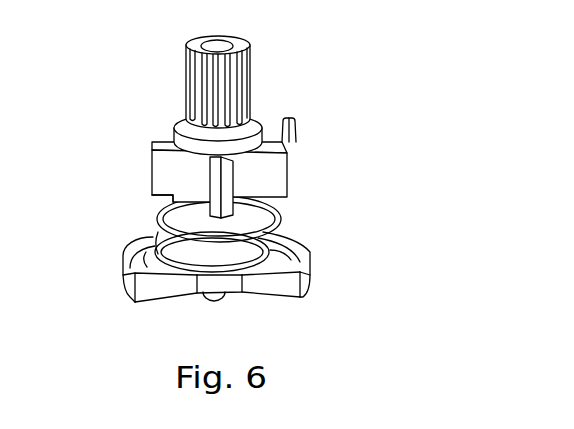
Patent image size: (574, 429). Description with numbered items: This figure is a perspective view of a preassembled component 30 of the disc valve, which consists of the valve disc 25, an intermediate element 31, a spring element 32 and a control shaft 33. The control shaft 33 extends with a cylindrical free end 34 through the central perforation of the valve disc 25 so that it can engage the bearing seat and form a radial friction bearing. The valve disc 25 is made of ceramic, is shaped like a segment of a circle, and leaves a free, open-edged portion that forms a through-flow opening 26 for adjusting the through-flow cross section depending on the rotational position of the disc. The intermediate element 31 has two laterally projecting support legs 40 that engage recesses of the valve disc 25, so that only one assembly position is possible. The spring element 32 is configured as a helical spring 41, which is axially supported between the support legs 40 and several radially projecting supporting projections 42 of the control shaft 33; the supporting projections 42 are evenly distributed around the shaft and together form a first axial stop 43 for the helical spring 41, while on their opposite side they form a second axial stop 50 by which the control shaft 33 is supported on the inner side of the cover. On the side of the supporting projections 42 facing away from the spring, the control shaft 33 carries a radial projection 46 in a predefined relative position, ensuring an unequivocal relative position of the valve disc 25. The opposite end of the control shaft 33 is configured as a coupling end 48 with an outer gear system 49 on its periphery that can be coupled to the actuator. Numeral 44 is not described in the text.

The preassembled component 30 is at (415, 80).
The control shaft 33 is at (256, 83).
The coupling end 48 is at (250, 46).
The outer gear system 49 is at (188, 58).
The second axial stop 50 is at (158, 126).
The supporting projections 42 is at (152, 144).
The radial projection 46 is at (294, 132).
The spring element 32 is at (124, 208).
The helical spring 41 is at (279, 216).
The first axial stop 43 is at (153, 216).
The support legs 40 is at (137, 263).
The slot 44 is at (297, 258).
The intermediate element 31 is at (197, 258).
The free end 34 is at (228, 300).
The through-flow opening 26 is at (275, 287).
The valve disc 25 is at (314, 290).